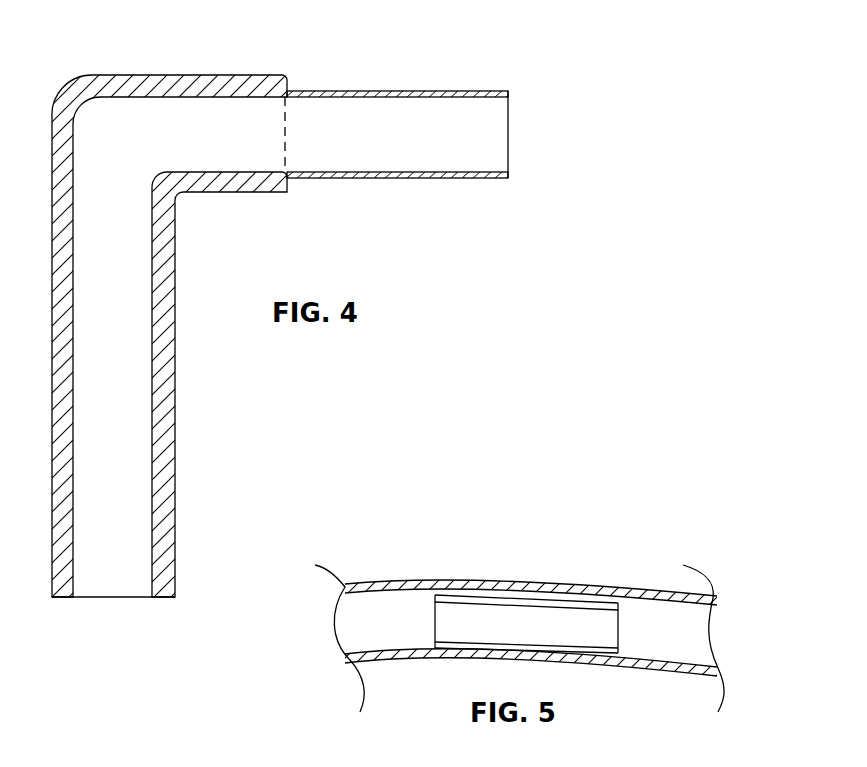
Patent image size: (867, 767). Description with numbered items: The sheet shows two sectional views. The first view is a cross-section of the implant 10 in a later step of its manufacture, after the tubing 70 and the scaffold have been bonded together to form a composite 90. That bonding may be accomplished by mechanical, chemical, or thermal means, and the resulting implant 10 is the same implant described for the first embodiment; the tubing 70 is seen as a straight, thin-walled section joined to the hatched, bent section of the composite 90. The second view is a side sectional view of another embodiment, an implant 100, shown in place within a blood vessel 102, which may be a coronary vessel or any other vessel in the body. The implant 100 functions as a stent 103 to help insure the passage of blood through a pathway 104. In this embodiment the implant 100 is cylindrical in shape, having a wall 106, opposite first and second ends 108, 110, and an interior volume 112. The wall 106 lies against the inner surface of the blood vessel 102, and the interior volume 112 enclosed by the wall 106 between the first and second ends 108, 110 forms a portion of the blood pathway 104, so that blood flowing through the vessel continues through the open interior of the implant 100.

In FIG. 4, the implant 10 is at (574, 62).
In FIG. 4, the tubing 70 is at (444, 178).
In FIG. 4, the composite 90 is at (170, 384).
In FIG. 5, the implant 100 is at (405, 613).
In FIG. 5, the blood vessel 102 is at (650, 590).
In FIG. 5, the stent 103 is at (498, 586).
In FIG. 5, the pathway 104 is at (600, 650).
In FIG. 5, the wall 106 is at (463, 656).
In FIG. 5, the first end 108 is at (618, 602).
In FIG. 5, the second end 110 is at (440, 644).
In FIG. 5, the interior volume 112 is at (466, 606).